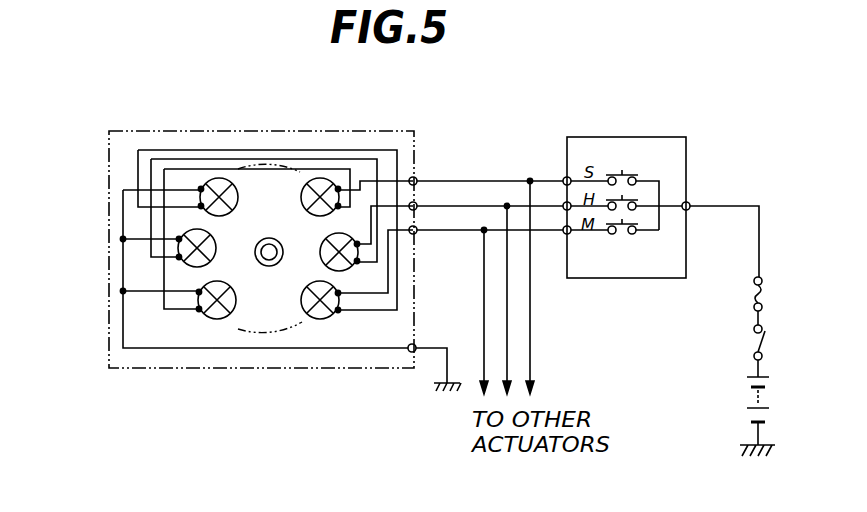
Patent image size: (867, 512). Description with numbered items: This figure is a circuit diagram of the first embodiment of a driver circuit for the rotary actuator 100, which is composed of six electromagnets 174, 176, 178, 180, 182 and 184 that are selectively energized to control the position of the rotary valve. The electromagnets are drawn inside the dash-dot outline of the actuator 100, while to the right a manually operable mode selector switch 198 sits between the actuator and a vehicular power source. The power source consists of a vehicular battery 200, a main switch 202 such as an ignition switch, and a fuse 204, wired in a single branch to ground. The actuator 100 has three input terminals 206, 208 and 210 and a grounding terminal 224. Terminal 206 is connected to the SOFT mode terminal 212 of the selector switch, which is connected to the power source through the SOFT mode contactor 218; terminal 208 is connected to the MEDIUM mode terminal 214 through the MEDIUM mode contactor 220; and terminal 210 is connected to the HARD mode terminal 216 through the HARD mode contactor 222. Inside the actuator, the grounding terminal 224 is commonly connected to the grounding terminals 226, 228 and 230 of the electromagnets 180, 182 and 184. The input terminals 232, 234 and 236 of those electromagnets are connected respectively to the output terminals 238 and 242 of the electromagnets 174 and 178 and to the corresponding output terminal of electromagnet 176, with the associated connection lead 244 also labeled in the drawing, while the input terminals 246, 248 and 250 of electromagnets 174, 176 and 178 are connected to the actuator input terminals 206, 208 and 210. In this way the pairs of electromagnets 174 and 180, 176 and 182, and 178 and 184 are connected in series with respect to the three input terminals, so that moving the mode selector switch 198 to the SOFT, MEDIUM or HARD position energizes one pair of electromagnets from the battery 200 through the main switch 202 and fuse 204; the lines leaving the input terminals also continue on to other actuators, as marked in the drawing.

The actuator 100 is at (416, 144).
The electromagnet 174 is at (320, 178).
The electromagnet 176 is at (237, 302).
The electromagnet 178 is at (279, 265).
The electromagnet 180 is at (244, 277).
The electromagnet 182 is at (223, 178).
The electromagnet 184 is at (208, 225).
The mode selector switch 198 is at (686, 137).
The vehicular battery 200 is at (752, 397).
The main switch 202 is at (755, 342).
The fuse 204 is at (752, 292).
The input terminal 206 is at (417, 178).
The input terminal 208 is at (414, 235).
The input terminal 210 is at (417, 210).
The SOFT mode terminal 212 is at (565, 177).
The MEDIUM mode terminal 214 is at (563, 234).
The HARD mode terminal 216 is at (565, 203).
The SOFT mode contactor 218 is at (628, 173).
The MEDIUM mode contactor 220 is at (633, 218).
The HARD mode contactor 222 is at (630, 198).
The grounding terminal 224 is at (410, 352).
The grounding terminal 226 is at (199, 293).
The grounding terminal 228 is at (201, 187).
The grounding terminal 230 is at (178, 238).
The input terminal 232 is at (199, 311).
The input terminal 234 is at (200, 205).
The input terminal 236 is at (178, 259).
The output terminal 238 is at (319, 256).
The output terminal 242 is at (357, 262).
The conductor 244 is at (333, 320).
The input terminal 246 is at (340, 187).
The input terminal 248 is at (318, 320).
The input terminal 250 is at (357, 244).